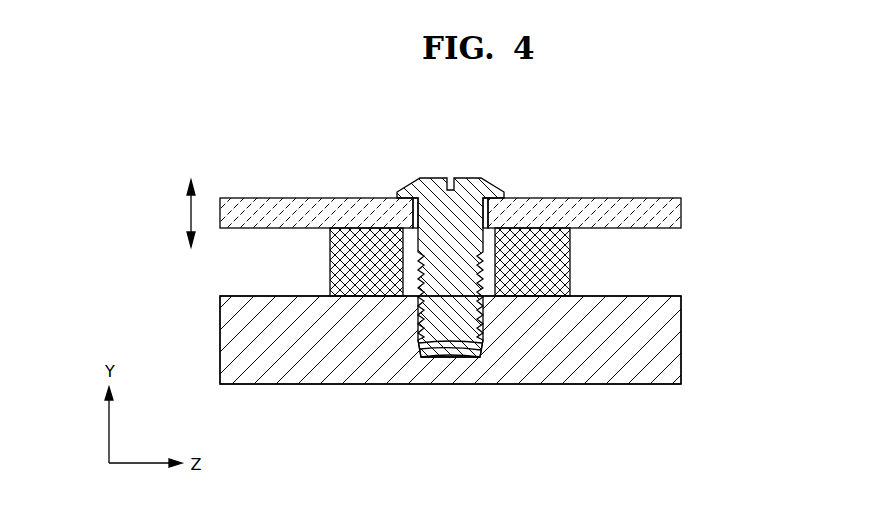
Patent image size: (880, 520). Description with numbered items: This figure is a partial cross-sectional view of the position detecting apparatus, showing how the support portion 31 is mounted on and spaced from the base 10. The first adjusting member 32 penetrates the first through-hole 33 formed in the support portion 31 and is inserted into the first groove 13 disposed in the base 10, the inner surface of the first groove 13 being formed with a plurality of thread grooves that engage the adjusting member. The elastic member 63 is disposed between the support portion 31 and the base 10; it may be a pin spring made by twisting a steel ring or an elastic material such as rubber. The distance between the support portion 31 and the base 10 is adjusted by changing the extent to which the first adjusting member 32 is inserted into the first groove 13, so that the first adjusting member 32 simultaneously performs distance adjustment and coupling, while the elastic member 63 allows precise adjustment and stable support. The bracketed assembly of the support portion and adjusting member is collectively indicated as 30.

The base 10 is at (676, 344).
The first groove 13 is at (440, 362).
The fastening unit 30 is at (470, 268).
The support portion 31 is at (683, 198).
The first adjusting member 32 is at (535, 277).
The first through-hole 33 is at (412, 222).
The elastic member 63 is at (564, 264).